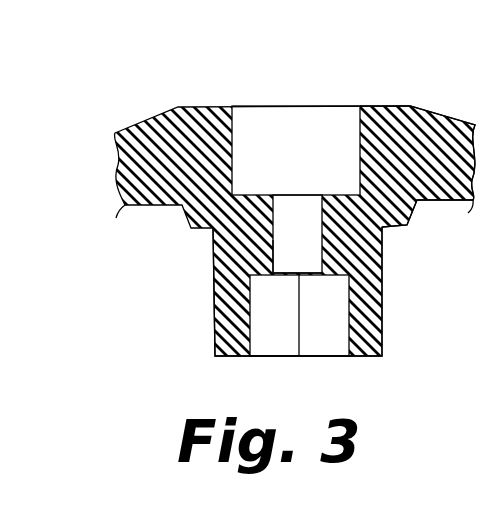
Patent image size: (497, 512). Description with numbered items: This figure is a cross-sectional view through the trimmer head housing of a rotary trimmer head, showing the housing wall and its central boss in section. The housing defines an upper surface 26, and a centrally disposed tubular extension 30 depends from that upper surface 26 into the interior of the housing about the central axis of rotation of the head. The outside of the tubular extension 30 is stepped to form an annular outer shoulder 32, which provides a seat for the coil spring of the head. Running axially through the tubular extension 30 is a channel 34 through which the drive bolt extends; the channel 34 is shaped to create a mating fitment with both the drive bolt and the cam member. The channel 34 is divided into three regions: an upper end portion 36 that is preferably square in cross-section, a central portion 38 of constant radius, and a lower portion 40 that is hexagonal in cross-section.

The upper surface 26 is at (122, 192).
The tubular extension 30 is at (215, 322).
The annular outer shoulder 32 is at (397, 228).
The axial channel 34 is at (286, 200).
The upper end portion 36 is at (360, 133).
The central portion 38 is at (272, 250).
The lower portion 40 is at (328, 343).